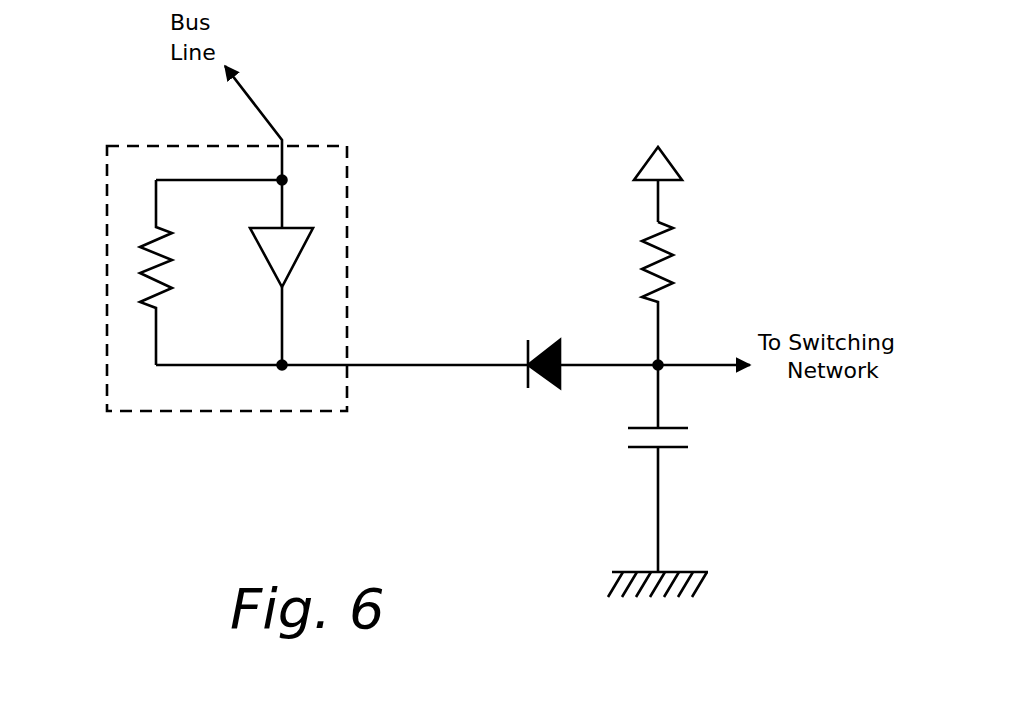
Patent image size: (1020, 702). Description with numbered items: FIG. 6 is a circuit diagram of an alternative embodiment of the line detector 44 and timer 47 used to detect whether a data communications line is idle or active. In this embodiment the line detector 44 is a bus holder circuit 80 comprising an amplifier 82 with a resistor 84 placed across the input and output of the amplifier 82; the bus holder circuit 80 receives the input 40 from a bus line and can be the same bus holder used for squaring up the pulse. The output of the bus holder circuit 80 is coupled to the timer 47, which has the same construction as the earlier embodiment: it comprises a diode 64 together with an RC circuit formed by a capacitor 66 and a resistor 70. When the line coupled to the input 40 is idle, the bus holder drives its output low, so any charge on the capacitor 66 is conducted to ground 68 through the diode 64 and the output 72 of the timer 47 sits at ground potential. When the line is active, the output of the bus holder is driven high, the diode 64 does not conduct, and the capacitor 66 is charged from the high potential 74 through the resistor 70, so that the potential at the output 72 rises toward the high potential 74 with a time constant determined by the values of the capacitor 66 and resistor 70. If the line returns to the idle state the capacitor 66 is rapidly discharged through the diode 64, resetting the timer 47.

The input 40 is at (258, 105).
The line detector 44 is at (273, 259).
The timer 47 is at (814, 288).
The diode 64 is at (560, 338).
The capacitor 66 is at (675, 448).
The ground 68 is at (637, 572).
The resistor 70 is at (670, 255).
The output 72 is at (683, 362).
The high potential 74 is at (670, 163).
The bus holder circuit 80 is at (105, 252).
The amplifier 82 is at (306, 238).
The resistor 84 is at (143, 272).